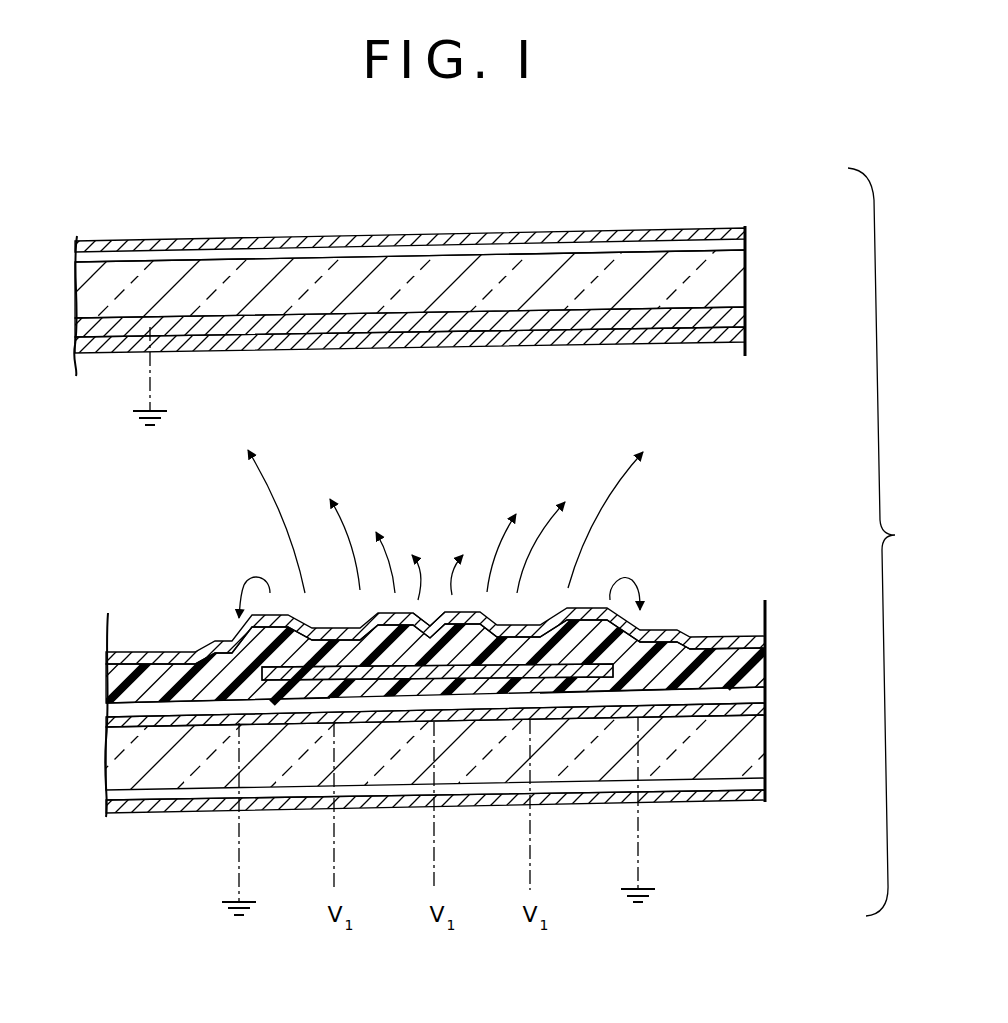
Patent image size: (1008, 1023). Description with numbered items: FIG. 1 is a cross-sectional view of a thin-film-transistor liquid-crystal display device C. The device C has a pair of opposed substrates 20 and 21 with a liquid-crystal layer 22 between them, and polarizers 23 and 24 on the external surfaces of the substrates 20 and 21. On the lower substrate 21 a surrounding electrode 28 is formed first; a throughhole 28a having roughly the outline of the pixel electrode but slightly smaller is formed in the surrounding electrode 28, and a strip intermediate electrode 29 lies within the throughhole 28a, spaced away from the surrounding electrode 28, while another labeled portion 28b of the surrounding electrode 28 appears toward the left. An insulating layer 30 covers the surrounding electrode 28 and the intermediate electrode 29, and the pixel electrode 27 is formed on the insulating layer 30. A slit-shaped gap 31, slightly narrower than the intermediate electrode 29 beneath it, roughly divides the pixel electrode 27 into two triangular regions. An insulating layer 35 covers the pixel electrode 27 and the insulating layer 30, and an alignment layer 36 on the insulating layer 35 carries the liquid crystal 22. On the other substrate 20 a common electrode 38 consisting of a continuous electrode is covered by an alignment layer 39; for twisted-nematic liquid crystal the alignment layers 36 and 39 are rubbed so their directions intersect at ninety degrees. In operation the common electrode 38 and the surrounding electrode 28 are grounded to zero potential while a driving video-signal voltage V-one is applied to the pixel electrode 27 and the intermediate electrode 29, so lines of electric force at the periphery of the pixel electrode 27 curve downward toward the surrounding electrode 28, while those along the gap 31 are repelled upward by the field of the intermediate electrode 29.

The substrate 20 is at (735, 270).
The substrate 21 is at (757, 747).
The liquid-crystal layer 22 is at (722, 446).
The polarizer 23 is at (745, 231).
The polarizer 24 is at (757, 795).
The pixel electrode 27 is at (313, 695).
The surrounding electrode 28 is at (195, 703).
The throughhole 28a is at (697, 712).
The electrode portion 28b is at (250, 722).
The intermediate electrode 29 is at (455, 705).
The insulating layer 30 is at (757, 697).
The gap 31 is at (441, 620).
The insulating layer 35 is at (757, 672).
The alignment layer 36 is at (757, 641).
The common electrode 38 is at (735, 318).
The alignment layer 39 is at (737, 332).
The liquid-crystal display device C is at (886, 542).